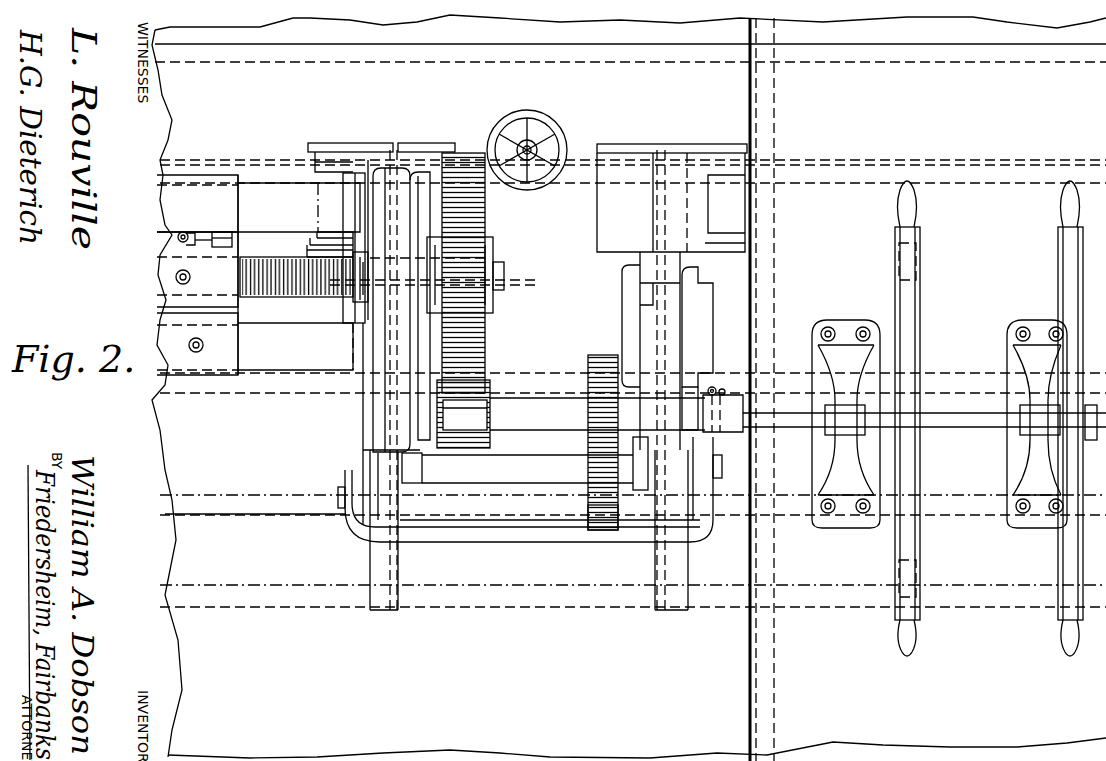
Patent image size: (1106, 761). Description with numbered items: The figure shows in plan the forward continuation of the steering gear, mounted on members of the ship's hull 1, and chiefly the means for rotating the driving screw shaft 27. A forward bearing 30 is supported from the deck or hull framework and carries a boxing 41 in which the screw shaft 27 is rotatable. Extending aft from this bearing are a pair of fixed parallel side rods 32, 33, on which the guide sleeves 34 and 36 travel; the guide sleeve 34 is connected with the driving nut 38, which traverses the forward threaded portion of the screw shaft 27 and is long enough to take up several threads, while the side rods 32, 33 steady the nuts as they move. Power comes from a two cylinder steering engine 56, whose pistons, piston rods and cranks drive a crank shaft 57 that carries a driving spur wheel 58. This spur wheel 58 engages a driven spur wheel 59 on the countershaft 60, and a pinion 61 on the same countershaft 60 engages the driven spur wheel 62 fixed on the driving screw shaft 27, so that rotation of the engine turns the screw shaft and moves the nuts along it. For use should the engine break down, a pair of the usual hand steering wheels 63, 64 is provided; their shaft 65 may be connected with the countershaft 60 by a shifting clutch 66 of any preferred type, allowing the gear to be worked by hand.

The hull member 1 is at (598, 328).
The driving screw shaft 27 is at (520, 247).
The forward bearing 30 is at (410, 205).
The side rod 32 is at (303, 240).
The side rod 33 is at (295, 275).
The guide sleeve 34 is at (197, 203).
The guide sleeve 36 is at (197, 344).
The driving nut 38 is at (197, 269).
The boxing 41 is at (363, 293).
The steering engine 56 is at (340, 148).
The crank shaft 57 is at (530, 489).
The driving spur wheel 58 is at (602, 512).
The driven spur wheel 59 is at (598, 365).
The countershaft 60 is at (597, 414).
The pinion 61 is at (470, 418).
The driven spur wheel 62 is at (478, 212).
The steering wheel 63 is at (918, 262).
The steering wheel 64 is at (1068, 257).
The steering wheel shaft 65 is at (972, 415).
The shifting clutch 66 is at (732, 413).